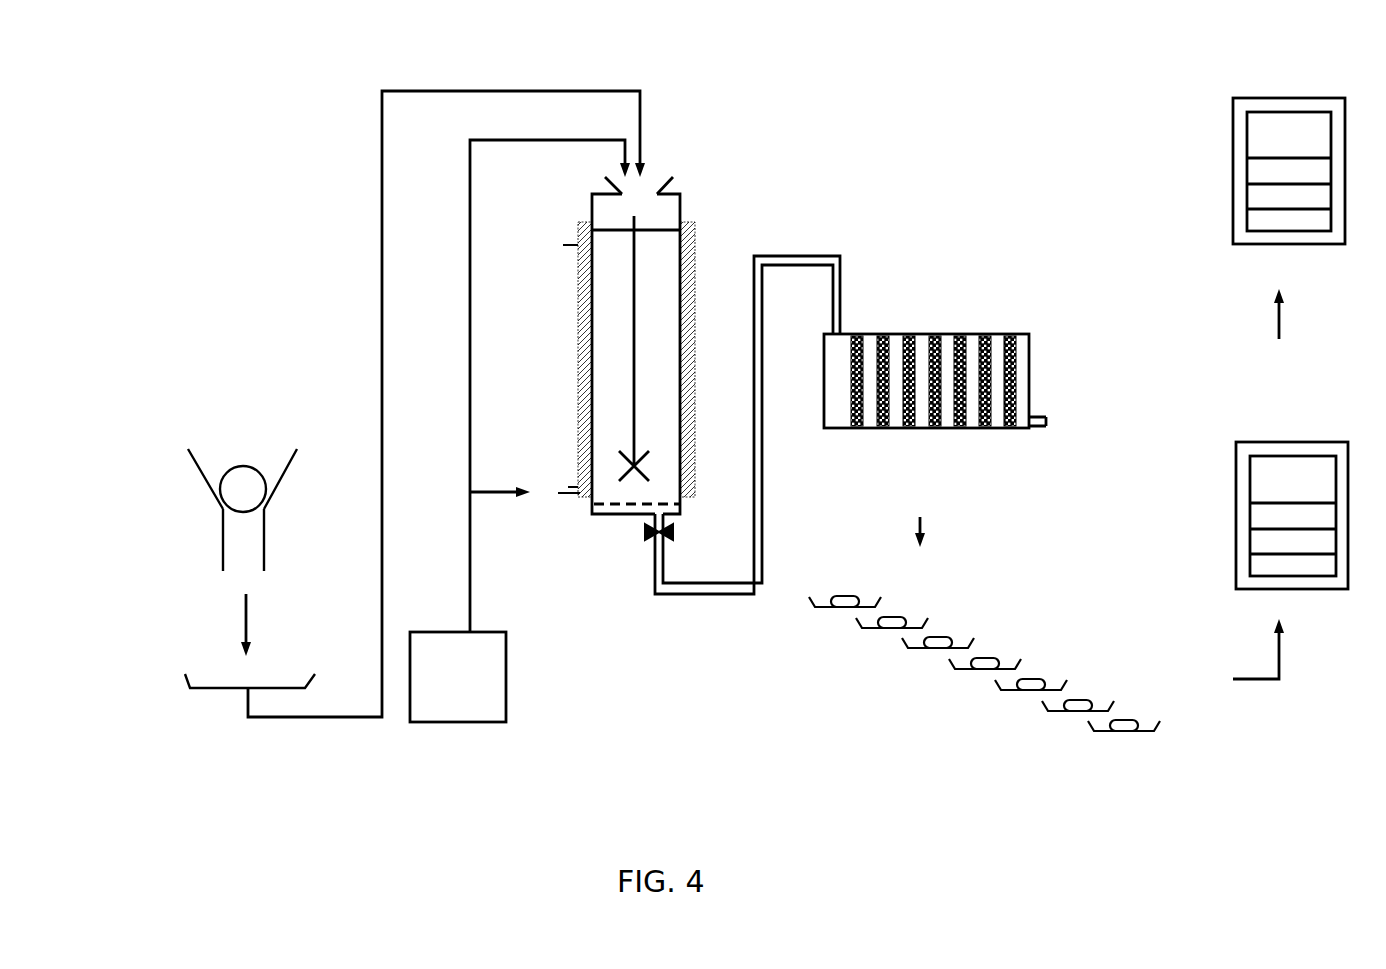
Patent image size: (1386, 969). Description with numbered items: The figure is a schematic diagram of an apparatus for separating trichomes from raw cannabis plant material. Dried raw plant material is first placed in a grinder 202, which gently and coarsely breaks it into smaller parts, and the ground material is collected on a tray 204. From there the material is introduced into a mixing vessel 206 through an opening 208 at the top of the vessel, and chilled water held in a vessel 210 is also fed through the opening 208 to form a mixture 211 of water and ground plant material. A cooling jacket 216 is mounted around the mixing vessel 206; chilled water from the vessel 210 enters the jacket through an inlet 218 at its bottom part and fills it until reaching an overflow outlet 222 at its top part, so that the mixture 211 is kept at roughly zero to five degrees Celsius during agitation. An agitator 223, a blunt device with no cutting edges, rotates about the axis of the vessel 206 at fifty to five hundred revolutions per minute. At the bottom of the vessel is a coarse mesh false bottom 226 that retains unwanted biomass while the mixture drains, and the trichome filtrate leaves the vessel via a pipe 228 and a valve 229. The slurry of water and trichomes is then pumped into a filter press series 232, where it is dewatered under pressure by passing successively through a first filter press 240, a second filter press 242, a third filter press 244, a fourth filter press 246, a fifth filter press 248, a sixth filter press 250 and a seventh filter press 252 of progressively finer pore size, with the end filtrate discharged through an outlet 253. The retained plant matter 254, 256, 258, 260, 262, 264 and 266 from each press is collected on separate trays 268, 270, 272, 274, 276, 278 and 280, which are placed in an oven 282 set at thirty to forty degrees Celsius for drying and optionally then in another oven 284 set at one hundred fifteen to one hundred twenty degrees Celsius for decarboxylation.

The grinder 202 is at (263, 550).
The tray 204 is at (202, 692).
The mixing vessel 206 is at (592, 201).
The opening 208 is at (666, 182).
The vessel 210 is at (506, 657).
The mixture 211 is at (605, 287).
The cooling jacket 216 is at (578, 369).
The inlet 218 is at (566, 483).
The overflow outlet 222 is at (568, 257).
The agitator 223 is at (633, 431).
The coarse mesh false bottom 226 is at (615, 508).
The pipe 228 is at (665, 552).
The valve 229 is at (655, 535).
The filter press series 232 is at (1029, 359).
The first filter press 240 is at (857, 429).
The second filter press 242 is at (882, 335).
The third filter press 244 is at (912, 429).
The fourth filter press 246 is at (935, 335).
The fifth filter press 248 is at (958, 429).
The sixth filter press 250 is at (983, 335).
The seventh filter press 252 is at (1013, 429).
The outlet 253 is at (1037, 430).
The retained plant matter 254 is at (851, 598).
The retained plant matter 256 is at (898, 619).
The retained plant matter 258 is at (944, 639).
The retained plant matter 260 is at (991, 660).
The retained plant matter 262 is at (1037, 681).
The retained plant matter 264 is at (1084, 702).
The retained plant matter 266 is at (1130, 722).
The tray 268 is at (818, 610).
The tray 270 is at (865, 631).
The tray 272 is at (911, 651).
The tray 274 is at (958, 672).
The tray 276 is at (1004, 693).
The tray 278 is at (1051, 714).
The tray 280 is at (1097, 734).
The oven 282 is at (1280, 443).
The oven 284 is at (1283, 99).